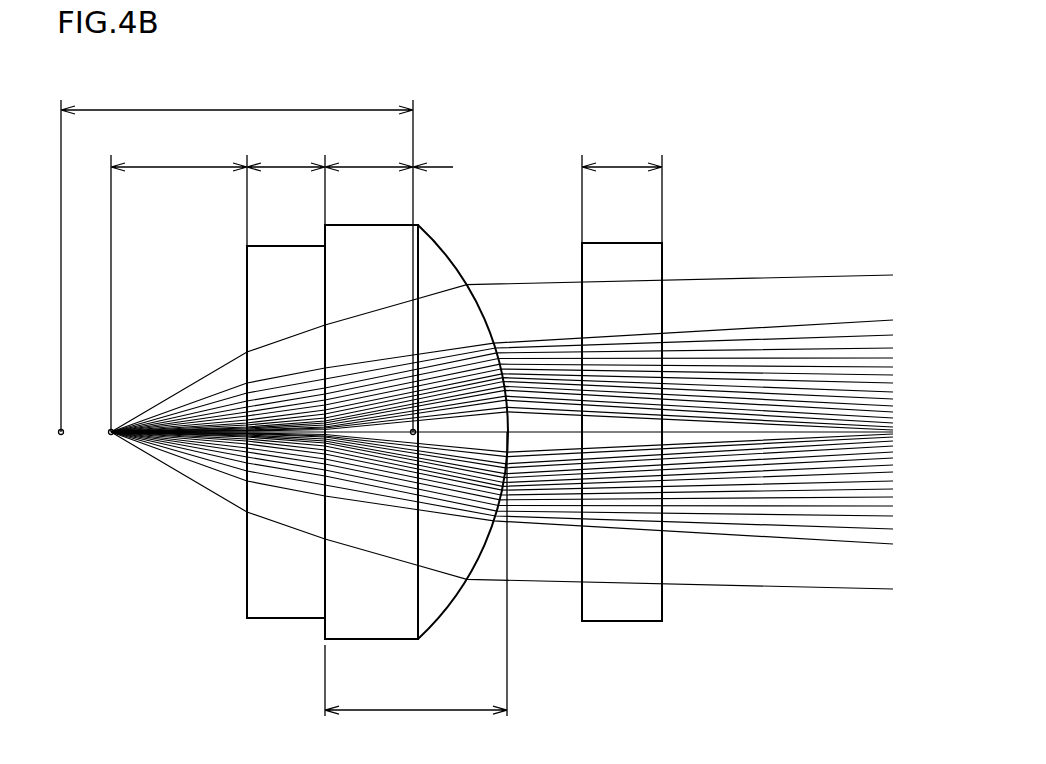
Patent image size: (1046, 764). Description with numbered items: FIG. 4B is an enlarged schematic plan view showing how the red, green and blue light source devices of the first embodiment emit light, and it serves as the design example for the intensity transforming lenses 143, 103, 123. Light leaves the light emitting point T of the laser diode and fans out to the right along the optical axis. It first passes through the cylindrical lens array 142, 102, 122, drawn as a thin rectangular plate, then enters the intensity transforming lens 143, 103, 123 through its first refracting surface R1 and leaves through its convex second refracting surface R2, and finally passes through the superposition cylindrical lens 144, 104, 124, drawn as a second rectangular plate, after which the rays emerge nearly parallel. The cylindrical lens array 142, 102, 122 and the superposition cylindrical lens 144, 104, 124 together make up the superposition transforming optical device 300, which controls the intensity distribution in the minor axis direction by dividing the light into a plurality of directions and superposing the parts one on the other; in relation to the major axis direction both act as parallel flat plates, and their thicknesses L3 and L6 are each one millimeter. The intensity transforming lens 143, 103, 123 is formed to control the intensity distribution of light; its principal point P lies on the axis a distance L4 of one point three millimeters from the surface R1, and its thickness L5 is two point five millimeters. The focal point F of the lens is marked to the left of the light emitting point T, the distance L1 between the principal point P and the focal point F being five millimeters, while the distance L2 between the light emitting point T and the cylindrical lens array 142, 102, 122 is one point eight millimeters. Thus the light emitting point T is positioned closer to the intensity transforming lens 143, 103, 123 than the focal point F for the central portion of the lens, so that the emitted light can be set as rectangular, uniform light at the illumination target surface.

The cylindrical lens array 142 is at (186, 432).
The cylindrical lens array 102 is at (186, 432).
The cylindrical lens array 122 is at (281, 557).
The intensity transforming lens 143 is at (515, 475).
The intensity transforming lens 103 is at (515, 475).
The intensity transforming lens 123 is at (432, 597).
The superposition cylindrical lens 144 is at (734, 461).
The superposition cylindrical lens 104 is at (734, 461).
The superposition cylindrical lens 124 is at (633, 598).
The superposition transforming optical device 300 is at (466, 475).
The focal point F is at (60, 288).
The light emitting point T is at (110, 315).
The principal point P is at (413, 432).
The first refracting surface R1 is at (308, 630).
The second refracting surface R2 is at (467, 605).
The distance between principal point and focal point L1 is at (237, 95).
The distance between light emitting point and cylindrical lens array L2 is at (179, 188).
The thickness of cylindrical lens array L3 is at (286, 177).
The distance from surface R1 to principal point L4 is at (389, 150).
The thickness of intensity transforming lens L5 is at (416, 574).
The thickness of superposition cylindrical lens L6 is at (622, 186).